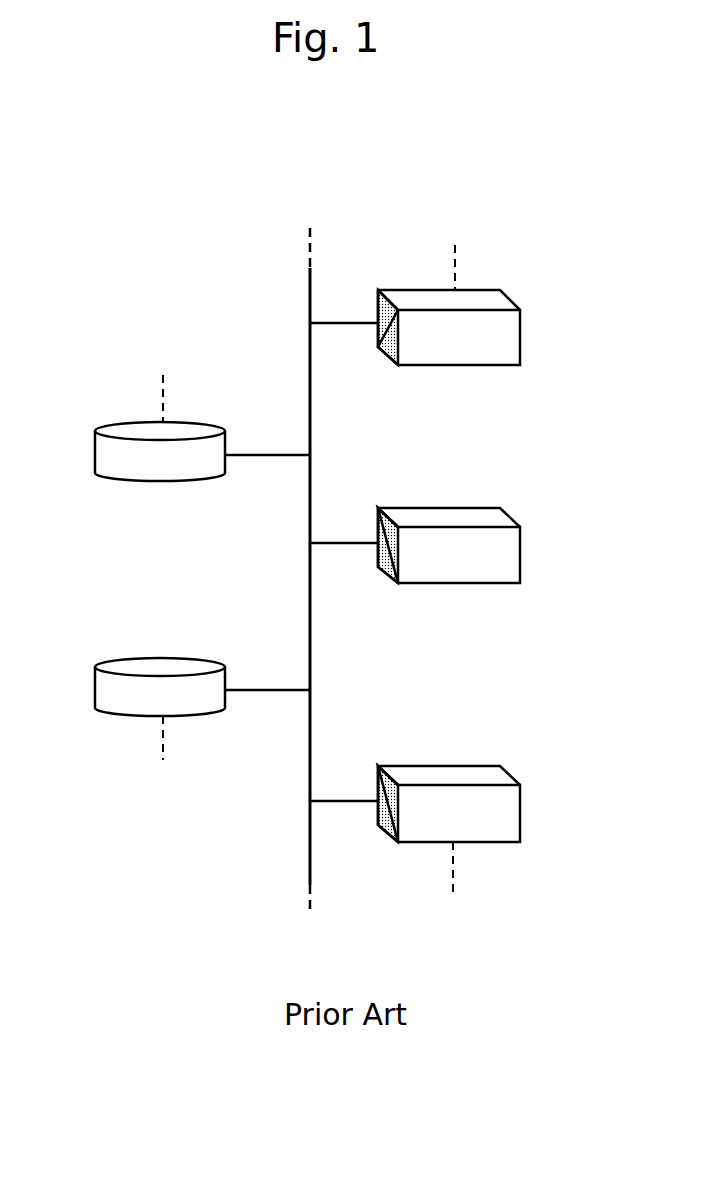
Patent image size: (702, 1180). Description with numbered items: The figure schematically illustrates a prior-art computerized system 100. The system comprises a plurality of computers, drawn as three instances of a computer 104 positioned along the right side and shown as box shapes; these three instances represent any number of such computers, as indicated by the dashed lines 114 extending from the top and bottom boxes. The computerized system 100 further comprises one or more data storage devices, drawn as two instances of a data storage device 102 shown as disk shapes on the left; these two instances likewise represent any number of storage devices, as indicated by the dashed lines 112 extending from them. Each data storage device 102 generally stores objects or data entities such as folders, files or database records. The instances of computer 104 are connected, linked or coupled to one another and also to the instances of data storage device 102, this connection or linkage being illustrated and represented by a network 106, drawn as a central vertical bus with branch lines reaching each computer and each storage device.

The computerized system 100 is at (309, 209).
The data storage device 102 is at (190, 479).
The computer 104 is at (483, 365).
The network 106 is at (332, 322).
The dashed lines 112 is at (163, 402).
The dashed lines 114 is at (455, 272).